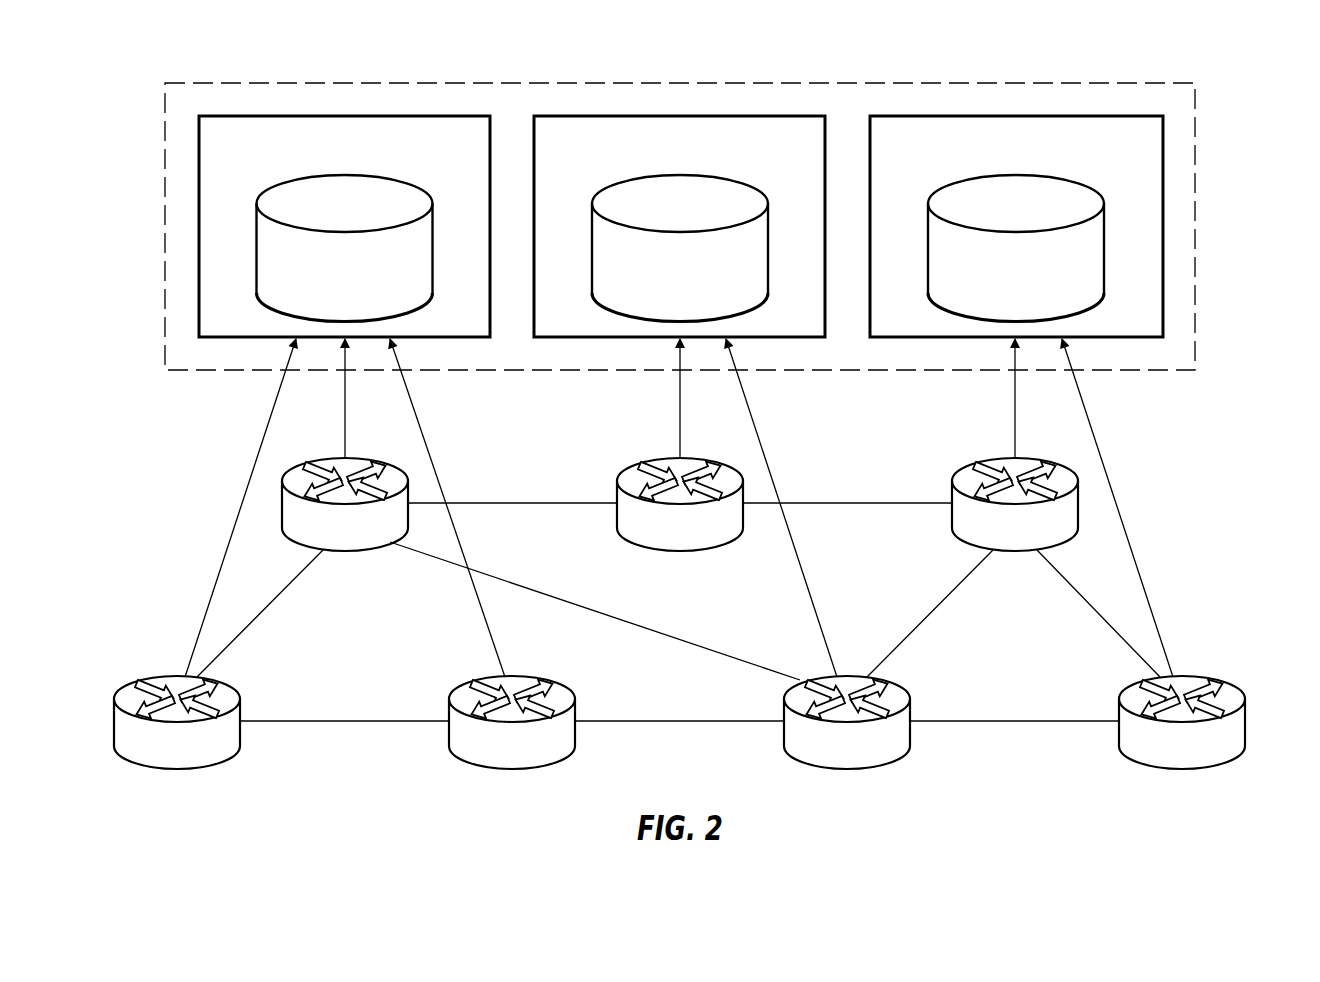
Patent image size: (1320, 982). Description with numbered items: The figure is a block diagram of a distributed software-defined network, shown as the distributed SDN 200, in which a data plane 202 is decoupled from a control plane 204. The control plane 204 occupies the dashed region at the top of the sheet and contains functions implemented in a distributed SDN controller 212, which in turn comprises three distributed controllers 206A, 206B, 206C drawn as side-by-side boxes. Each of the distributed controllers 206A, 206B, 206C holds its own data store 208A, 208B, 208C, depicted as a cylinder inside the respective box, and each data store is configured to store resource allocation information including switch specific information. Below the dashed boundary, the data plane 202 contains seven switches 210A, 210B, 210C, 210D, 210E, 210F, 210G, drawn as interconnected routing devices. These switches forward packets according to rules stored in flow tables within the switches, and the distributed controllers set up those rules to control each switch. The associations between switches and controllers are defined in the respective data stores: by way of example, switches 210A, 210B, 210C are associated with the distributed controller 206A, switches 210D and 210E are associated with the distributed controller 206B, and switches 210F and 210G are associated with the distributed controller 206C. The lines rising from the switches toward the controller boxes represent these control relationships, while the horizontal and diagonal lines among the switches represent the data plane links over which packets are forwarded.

The distributed SDN 200 is at (1238, 92).
The data plane 202 is at (1238, 603).
The control plane 204 is at (1213, 220).
The distributed SDN controller 212 is at (1196, 183).
The distributed controller 206A is at (318, 154).
The distributed controller 206B is at (654, 154).
The distributed controller 206C is at (990, 154).
The data store 208A is at (318, 284).
The data store 208B is at (654, 284).
The data store 208C is at (990, 284).
The switch 210A is at (151, 755).
The switch 210B is at (486, 755).
The switch 210C is at (319, 537).
The switch 210D is at (821, 755).
The switch 210E is at (654, 537).
The switch 210F is at (989, 537).
The switch 210G is at (1156, 755).